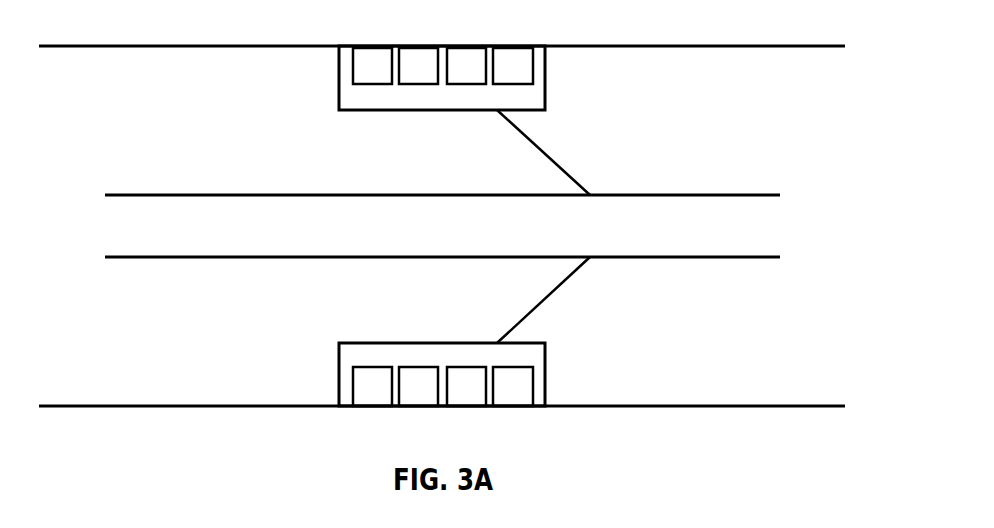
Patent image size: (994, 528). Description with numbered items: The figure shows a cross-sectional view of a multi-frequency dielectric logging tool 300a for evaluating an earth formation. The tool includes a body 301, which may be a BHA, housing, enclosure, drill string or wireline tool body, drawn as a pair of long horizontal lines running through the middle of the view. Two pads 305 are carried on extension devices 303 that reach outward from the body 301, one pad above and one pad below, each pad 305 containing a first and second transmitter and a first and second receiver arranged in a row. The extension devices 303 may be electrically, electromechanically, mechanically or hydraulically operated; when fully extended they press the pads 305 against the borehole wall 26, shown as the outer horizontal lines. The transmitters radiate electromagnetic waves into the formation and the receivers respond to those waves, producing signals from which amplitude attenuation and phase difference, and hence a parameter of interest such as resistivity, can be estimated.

The sensor arrangement 300a is at (798, 56).
The pipe wall / conduit 26 is at (85, 48).
The pads 305 is at (431, 45).
The extension devices 303 is at (546, 151).
The body 301 is at (176, 194).